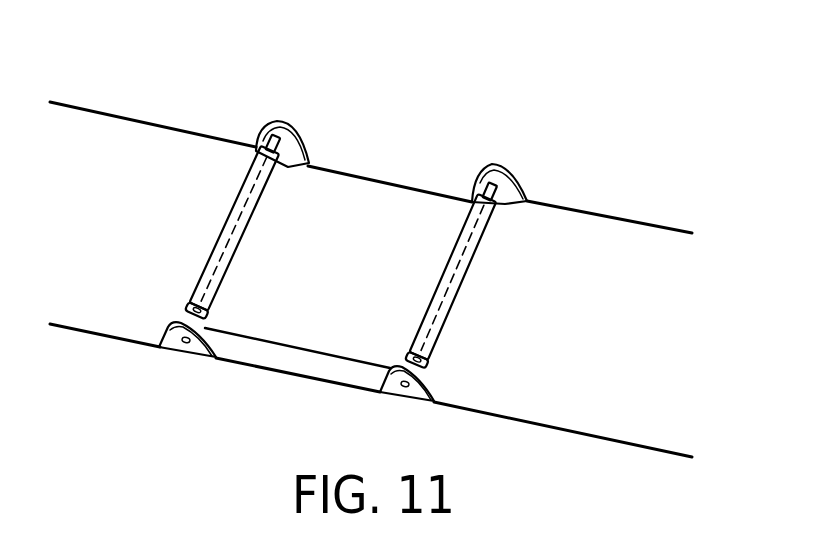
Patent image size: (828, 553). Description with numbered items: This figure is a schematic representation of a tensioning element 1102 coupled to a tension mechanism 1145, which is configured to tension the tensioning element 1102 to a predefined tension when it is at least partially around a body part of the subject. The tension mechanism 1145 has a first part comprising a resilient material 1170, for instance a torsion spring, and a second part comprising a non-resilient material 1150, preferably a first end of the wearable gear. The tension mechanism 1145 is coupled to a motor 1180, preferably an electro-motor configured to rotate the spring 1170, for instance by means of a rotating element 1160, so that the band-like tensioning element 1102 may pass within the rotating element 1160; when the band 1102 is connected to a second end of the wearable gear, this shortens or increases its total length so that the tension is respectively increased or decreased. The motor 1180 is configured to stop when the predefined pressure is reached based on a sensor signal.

The tension mechanism 1145 is at (535, 91).
The non-resilient material 1150 is at (601, 244).
The tensioning element 1102 is at (383, 212).
The resilient material 1170 is at (247, 181).
The motor 1180 is at (283, 122).
The rotating element 1160 is at (218, 304).